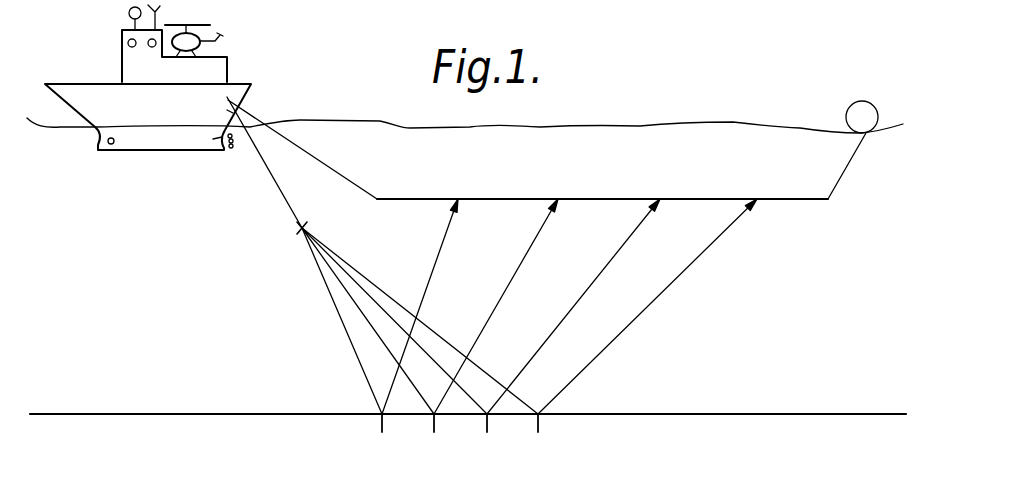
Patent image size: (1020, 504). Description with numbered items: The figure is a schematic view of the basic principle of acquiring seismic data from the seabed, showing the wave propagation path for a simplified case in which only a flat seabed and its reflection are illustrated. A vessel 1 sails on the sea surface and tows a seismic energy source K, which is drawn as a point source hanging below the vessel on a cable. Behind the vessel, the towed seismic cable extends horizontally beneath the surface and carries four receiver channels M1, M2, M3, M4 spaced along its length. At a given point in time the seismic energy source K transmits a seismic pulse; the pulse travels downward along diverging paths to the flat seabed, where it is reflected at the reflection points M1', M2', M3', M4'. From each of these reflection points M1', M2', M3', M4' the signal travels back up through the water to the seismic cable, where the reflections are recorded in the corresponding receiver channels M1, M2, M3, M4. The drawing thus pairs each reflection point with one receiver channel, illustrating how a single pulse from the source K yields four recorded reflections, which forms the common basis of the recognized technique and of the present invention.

The vessel 1 is at (227, 57).
The seismic energy source K is at (292, 228).
The receiver channel M1 is at (453, 192).
The receiver channel M2 is at (552, 192).
The receiver channel M3 is at (655, 192).
The receiver channel M4 is at (756, 192).
The reflection point M1' is at (387, 438).
The reflection point M2' is at (434, 438).
The reflection point M3' is at (487, 438).
The reflection point M4' is at (537, 438).